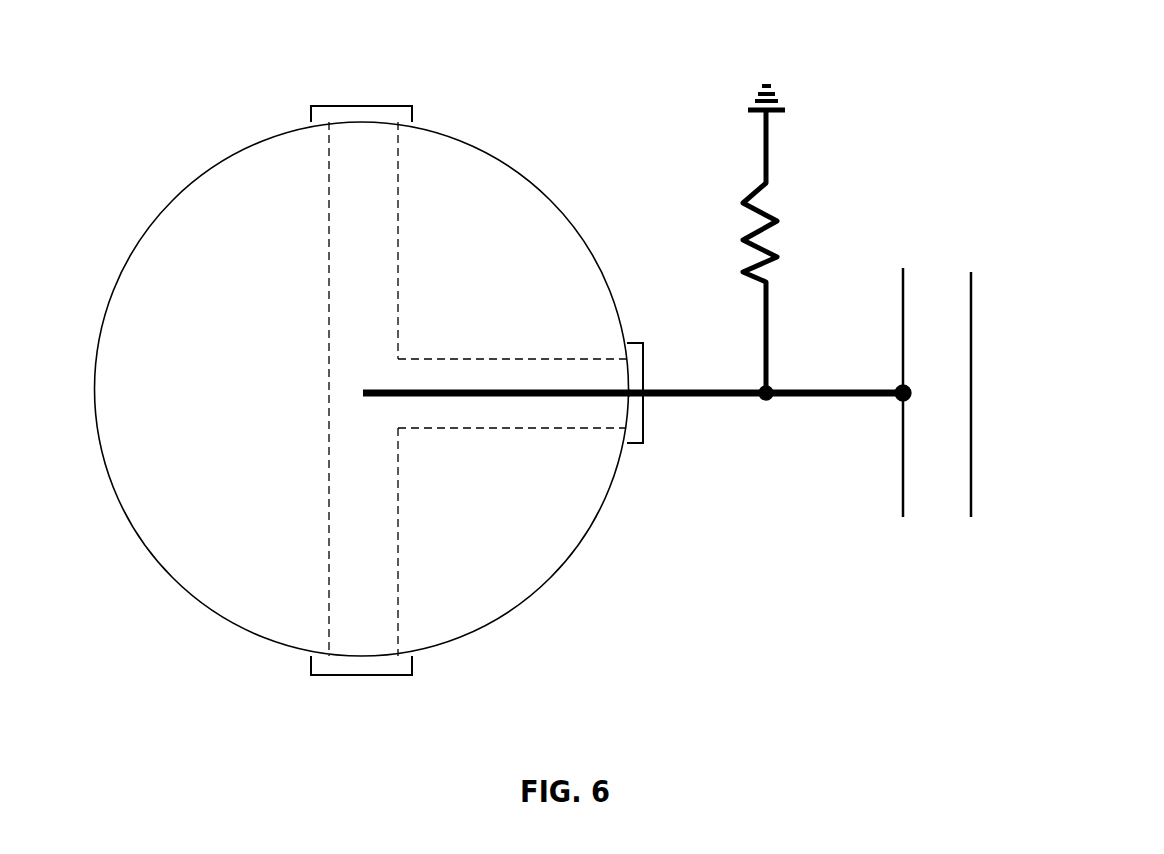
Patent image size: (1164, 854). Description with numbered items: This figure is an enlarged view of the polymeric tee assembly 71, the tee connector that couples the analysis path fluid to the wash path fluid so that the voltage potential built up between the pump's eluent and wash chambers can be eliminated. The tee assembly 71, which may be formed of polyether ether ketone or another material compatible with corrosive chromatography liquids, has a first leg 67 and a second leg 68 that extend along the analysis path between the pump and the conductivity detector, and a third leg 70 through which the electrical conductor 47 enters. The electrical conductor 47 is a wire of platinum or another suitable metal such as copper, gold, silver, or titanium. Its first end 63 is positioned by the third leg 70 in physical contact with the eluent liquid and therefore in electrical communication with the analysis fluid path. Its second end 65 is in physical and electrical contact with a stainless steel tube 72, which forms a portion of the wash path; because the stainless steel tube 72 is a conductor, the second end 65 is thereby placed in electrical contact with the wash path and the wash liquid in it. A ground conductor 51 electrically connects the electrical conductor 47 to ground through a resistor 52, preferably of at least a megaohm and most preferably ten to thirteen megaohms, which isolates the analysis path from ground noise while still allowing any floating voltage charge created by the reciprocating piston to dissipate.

The electrical conductor 47 is at (838, 396).
The ground conductor 51 is at (767, 145).
The resistor 52 is at (780, 222).
The first end 63 is at (383, 391).
The second end 65 is at (903, 390).
The first leg 67 is at (398, 585).
The second leg 68 is at (398, 200).
The third leg 70 is at (470, 428).
The polymeric tee assembly 71 is at (518, 163).
The stainless steel tube 72 is at (971, 358).